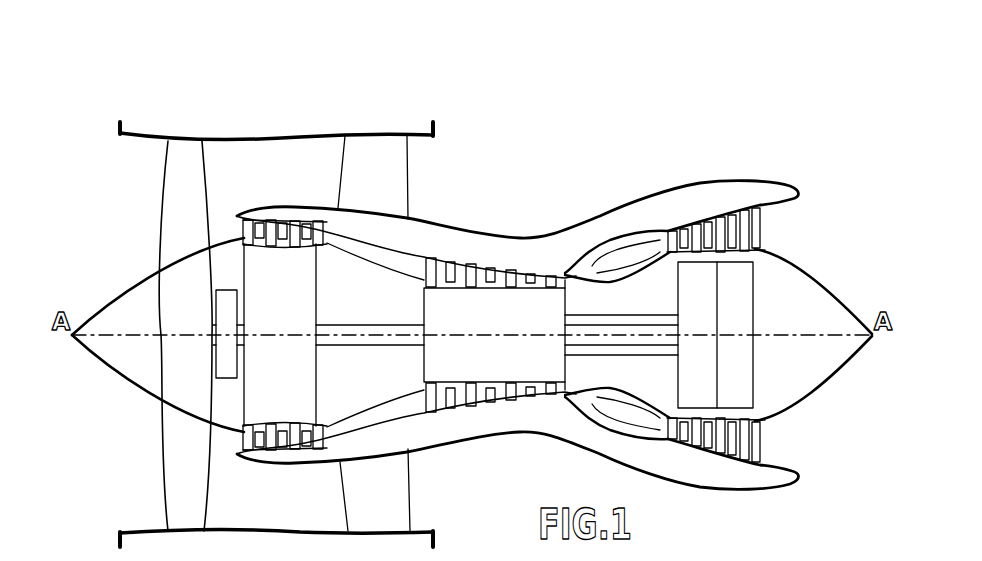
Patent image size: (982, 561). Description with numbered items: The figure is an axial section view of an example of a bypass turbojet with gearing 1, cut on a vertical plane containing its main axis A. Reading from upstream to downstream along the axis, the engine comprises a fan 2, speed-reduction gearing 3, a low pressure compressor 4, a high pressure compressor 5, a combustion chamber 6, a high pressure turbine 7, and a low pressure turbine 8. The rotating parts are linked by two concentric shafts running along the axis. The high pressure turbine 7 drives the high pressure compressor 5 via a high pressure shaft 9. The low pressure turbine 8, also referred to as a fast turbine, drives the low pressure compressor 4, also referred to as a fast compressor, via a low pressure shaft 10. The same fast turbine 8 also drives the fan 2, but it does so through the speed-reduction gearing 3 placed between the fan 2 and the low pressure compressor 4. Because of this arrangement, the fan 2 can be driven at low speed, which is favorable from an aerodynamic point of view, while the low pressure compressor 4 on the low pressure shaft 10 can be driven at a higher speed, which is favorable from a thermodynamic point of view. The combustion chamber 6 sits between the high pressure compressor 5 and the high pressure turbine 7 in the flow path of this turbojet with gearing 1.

The turbojet with gearing 1 is at (563, 110).
The fan 2 is at (182, 195).
The speed-reduction gearing 3 is at (222, 310).
The low pressure compressor 4 is at (283, 218).
The high pressure compressor 5 is at (472, 256).
The combustion chamber 6 is at (617, 252).
The high pressure turbine 7 is at (697, 213).
The low pressure turbine 8 is at (733, 176).
The high pressure shaft 9 is at (618, 315).
The low pressure shaft 10 is at (358, 328).